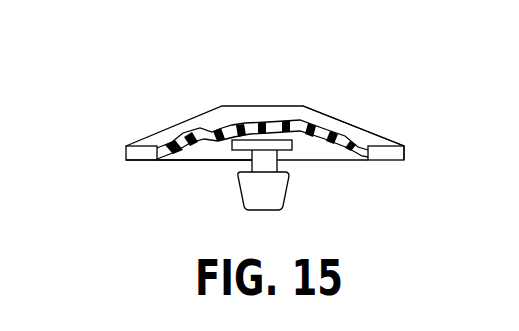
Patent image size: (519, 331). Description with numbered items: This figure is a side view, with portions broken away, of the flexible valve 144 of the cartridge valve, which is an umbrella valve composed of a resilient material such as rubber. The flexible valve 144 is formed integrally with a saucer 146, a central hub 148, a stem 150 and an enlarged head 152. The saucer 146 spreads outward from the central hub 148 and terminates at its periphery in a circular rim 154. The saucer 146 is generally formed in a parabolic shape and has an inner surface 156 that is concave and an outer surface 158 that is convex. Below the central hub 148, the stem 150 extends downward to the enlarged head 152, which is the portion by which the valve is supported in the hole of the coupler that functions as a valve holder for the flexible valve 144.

The flexible valve 144 is at (110, 120).
The saucer 146 is at (343, 122).
The central hub 148 is at (271, 140).
The stem 150 is at (258, 163).
The enlarged head 152 is at (277, 193).
The circular rim 154 is at (147, 160).
The inner surface 156 is at (385, 138).
The outer surface 158 is at (347, 153).